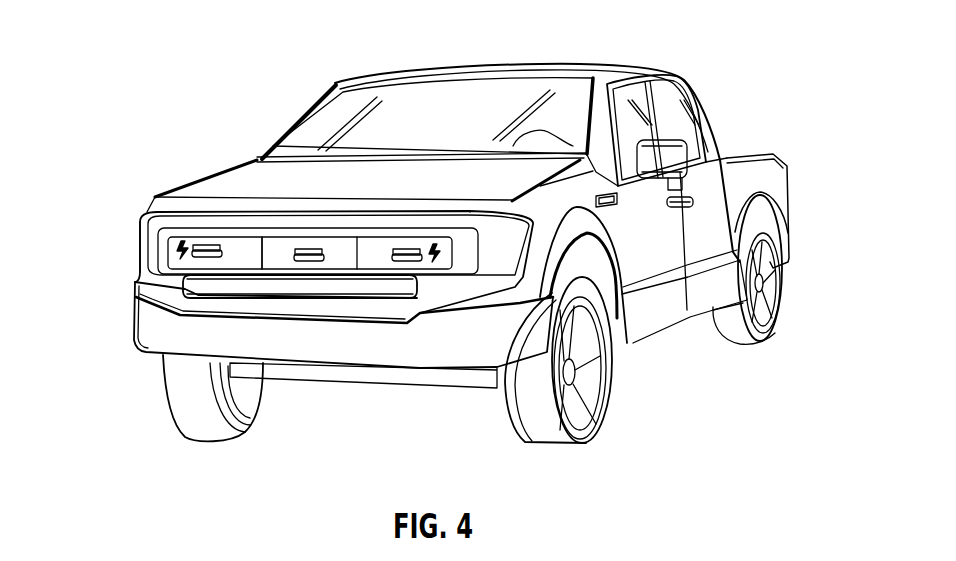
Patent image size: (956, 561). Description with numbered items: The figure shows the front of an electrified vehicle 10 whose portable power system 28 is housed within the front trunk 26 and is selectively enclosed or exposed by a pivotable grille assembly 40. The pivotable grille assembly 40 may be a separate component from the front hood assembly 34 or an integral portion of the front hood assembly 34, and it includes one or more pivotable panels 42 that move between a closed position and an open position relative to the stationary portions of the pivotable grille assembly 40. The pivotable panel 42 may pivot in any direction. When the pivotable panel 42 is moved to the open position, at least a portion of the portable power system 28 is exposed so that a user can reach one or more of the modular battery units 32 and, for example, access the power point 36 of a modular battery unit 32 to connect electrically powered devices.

The electrified vehicle 10 is at (197, 43).
The front trunk 26 is at (169, 244).
The portable power system 28 is at (268, 250).
The modular battery units 32 is at (238, 262).
The front hood assembly 34 is at (386, 177).
The power point 36 is at (212, 245).
The pivotable grille assembly 40 is at (137, 249).
The pivotable panel 42 is at (430, 221).